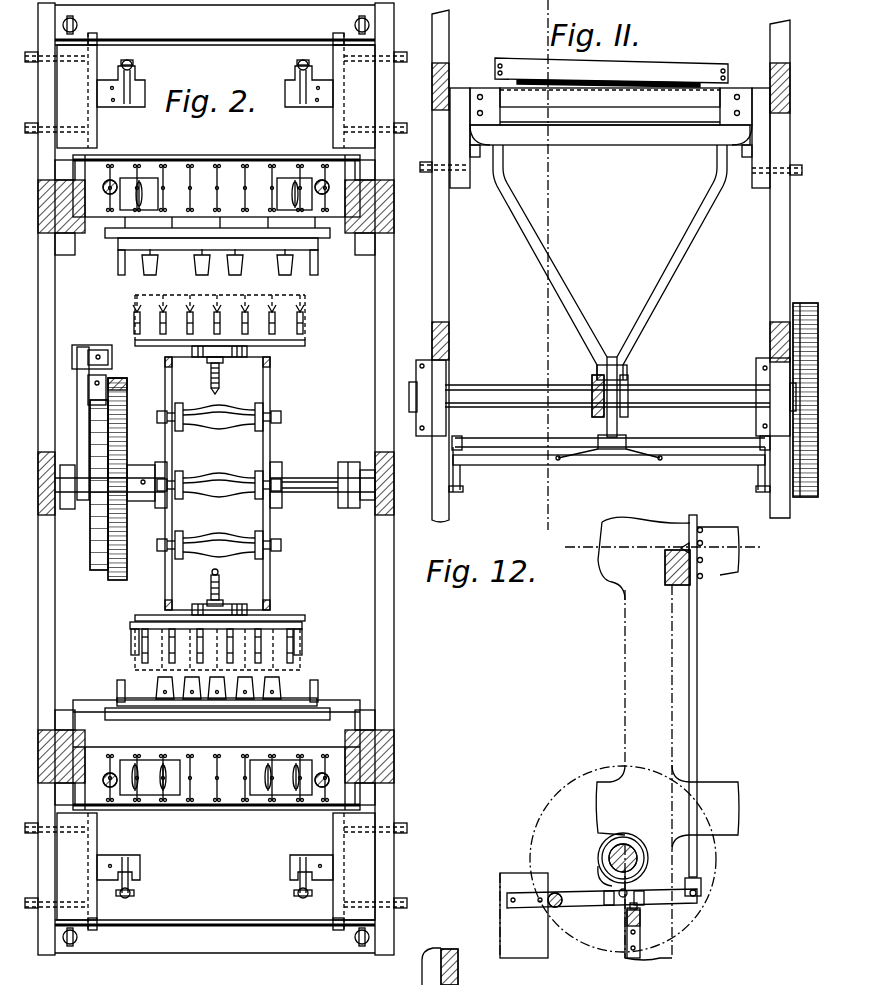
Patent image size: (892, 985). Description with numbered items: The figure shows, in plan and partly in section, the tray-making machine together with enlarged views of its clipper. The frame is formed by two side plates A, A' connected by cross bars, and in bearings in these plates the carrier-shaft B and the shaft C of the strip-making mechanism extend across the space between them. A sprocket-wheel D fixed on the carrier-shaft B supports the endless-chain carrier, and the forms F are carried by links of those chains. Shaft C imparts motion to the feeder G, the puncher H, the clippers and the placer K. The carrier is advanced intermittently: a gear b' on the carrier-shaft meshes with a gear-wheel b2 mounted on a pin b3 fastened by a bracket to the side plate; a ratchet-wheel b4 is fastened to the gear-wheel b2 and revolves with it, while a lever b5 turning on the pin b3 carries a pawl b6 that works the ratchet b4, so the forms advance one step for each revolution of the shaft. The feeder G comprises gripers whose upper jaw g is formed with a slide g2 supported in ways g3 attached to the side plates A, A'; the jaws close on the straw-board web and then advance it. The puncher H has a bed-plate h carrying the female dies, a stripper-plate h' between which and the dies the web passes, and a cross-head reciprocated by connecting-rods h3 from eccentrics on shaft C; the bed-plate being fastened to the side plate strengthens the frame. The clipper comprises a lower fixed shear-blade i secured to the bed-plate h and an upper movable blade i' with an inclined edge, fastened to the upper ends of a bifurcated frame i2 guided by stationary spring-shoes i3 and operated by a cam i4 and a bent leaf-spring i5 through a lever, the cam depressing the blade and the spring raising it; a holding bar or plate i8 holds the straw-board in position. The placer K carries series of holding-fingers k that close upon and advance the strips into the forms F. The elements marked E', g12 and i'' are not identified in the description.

In FIG. 2, the side plate A is at (216, 479).
In FIG. 11, the side plate A is at (771, 269).
In FIG. 11, the side plate A' is at (444, 266).
In FIG. 2, the carrier-shaft B is at (305, 478).
In FIG. 11, the shaft of the strip-making mechanism C is at (673, 392).
In FIG. 12, the shaft of the strip-making mechanism C is at (639, 848).
In FIG. 2, the sprocket-wheel D is at (205, 424).
In FIG. 2, the adjusting screw E' is at (227, 481).
In FIG. 2, the form F is at (217, 482).
In FIG. 2, the feeder G is at (216, 481).
In FIG. 2, the upper jaw g is at (300, 100).
In FIG. 2, the slide g2 is at (133, 103).
In FIG. 2, the ways g3 is at (216, 481).
In FIG. 2, the cross bar g12 is at (215, 478).
In FIG. 2, the puncher H is at (216, 482).
In FIG. 2, the bed-plate h is at (218, 483).
In FIG. 11, the bed-plate h is at (610, 134).
In FIG. 12, the bed-plate h is at (666, 567).
In FIG. 2, the stripper-plate h' is at (216, 486).
In FIG. 2, the connecting-rod h3 is at (113, 181).
In FIG. 2, the lower fixed shear-blade i is at (216, 722).
In FIG. 11, the lower fixed shear-blade i is at (610, 106).
In FIG. 12, the lower fixed shear-blade i is at (708, 553).
In FIG. 11, the upper movable blade i' is at (475, 136).
In FIG. 2, the plate i'' is at (217, 720).
In FIG. 11, the plate i'' is at (611, 73).
In FIG. 12, the plate i'' is at (705, 690).
In FIG. 11, the bifurcated frame i2 is at (610, 291).
In FIG. 12, the bifurcated frame i2 is at (698, 692).
In FIG. 11, the stationary spring-shoe i3 is at (737, 84).
In FIG. 11, the cam i4 is at (593, 410).
In FIG. 12, the cam i4 is at (598, 870).
In FIG. 11, the spring i5 is at (630, 452).
In FIG. 11, the holding bar or plate i8 is at (540, 80).
In FIG. 12, the holding bar or plate i8 is at (685, 547).
In FIG. 2, the placer K is at (288, 700).
In FIG. 2, the upper holding-finger k is at (253, 262).
In FIG. 2, the gear b' is at (92, 347).
In FIG. 2, the gear-wheel b2 is at (125, 380).
In FIG. 2, the pin b3 is at (152, 466).
In FIG. 2, the ratchet-wheel b4 is at (90, 545).
In FIG. 2, the lever b5 is at (78, 421).
In FIG. 2, the pawl b6 is at (98, 391).